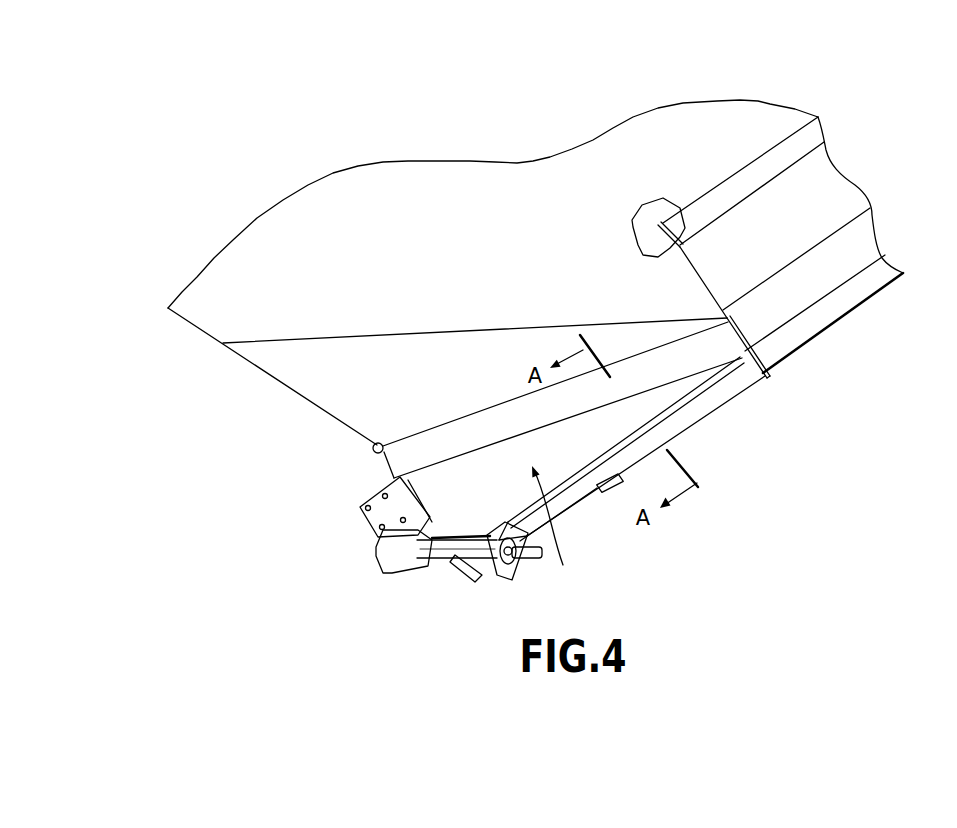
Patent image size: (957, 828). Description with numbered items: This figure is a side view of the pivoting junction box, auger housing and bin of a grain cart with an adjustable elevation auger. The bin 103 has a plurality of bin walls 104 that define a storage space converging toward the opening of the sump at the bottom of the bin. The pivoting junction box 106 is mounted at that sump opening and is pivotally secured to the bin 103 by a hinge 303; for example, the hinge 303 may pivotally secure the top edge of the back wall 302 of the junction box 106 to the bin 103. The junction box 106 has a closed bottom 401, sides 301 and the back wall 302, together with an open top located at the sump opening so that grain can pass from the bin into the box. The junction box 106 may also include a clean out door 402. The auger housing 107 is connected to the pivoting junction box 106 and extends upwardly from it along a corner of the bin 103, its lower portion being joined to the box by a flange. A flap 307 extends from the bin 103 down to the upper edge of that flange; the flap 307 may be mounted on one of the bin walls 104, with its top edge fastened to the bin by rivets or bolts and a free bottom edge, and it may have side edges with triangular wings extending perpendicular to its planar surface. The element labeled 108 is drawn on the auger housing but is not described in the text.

The bin 103 is at (365, 192).
The bin walls 104 is at (399, 332).
The pivoting junction box 106 is at (572, 455).
The auger housing 107 is at (860, 237).
The bottom flange 108 is at (826, 283).
The sides 301 is at (563, 525).
The back wall 302 is at (435, 540).
The hinge 303 is at (372, 452).
The flap 307 is at (657, 233).
The closed bottom 401 is at (712, 415).
The clean out door 402 is at (606, 500).